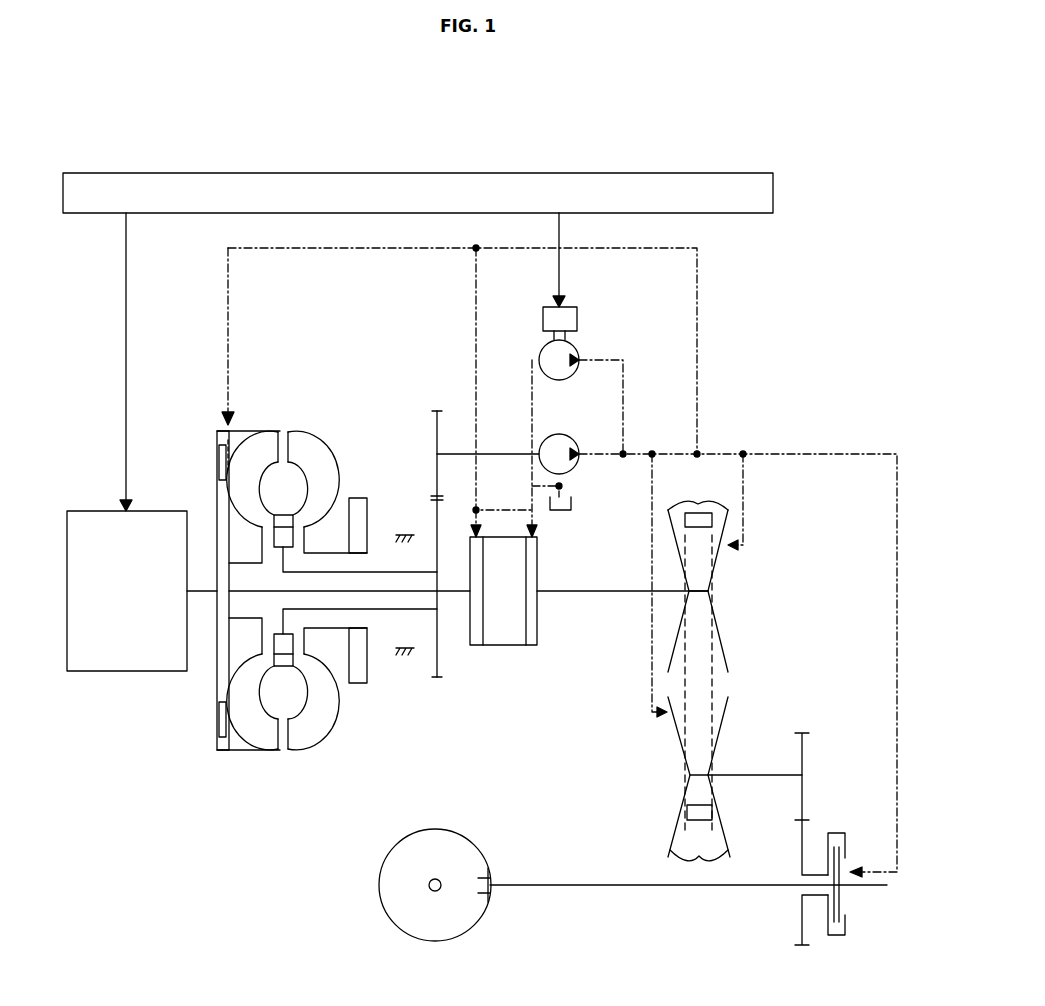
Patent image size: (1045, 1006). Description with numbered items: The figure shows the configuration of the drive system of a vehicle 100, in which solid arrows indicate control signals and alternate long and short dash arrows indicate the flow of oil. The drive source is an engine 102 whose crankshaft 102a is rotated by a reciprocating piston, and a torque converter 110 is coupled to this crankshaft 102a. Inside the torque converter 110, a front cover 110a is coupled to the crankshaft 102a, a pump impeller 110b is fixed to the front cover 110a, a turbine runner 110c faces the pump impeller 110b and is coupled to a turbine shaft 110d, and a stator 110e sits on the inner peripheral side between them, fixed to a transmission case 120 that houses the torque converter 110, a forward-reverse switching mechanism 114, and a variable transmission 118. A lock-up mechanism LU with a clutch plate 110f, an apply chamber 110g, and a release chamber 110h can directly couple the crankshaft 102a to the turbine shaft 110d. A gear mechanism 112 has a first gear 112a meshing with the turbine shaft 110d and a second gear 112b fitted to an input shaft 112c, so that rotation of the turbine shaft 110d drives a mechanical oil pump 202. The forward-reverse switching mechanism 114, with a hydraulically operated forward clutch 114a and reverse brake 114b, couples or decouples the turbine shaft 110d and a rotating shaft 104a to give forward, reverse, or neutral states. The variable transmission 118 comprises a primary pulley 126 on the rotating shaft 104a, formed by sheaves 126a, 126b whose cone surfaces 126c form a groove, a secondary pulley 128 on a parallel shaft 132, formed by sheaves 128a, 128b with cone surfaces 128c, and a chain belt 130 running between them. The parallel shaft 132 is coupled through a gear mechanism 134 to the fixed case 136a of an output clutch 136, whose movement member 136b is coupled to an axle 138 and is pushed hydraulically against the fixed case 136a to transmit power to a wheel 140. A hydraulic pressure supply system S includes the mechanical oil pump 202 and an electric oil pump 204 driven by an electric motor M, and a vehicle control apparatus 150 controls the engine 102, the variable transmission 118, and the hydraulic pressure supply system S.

The vehicle 100 is at (324, 130).
The vehicle control apparatus 150 is at (676, 172).
The engine 102 is at (143, 602).
The crankshaft 102a is at (206, 586).
The rotating shaft 104a is at (608, 594).
The torque converter 110 is at (293, 574).
The front cover 110a is at (222, 748).
The pump impeller 110b is at (290, 740).
The turbine runner 110c is at (270, 748).
The turbine shaft 110d is at (272, 625).
The stator 110e is at (306, 650).
The clutch plate 110f is at (228, 752).
The apply chamber 110g is at (238, 425).
The release chamber 110h is at (220, 450).
The lock-up mechanism LU is at (208, 752).
The gear mechanism 112 is at (462, 510).
The first gear 112a is at (437, 678).
The second gear 112b is at (437, 410).
The input shaft 112c is at (458, 452).
The forward-reverse switching mechanism 114 is at (503, 637).
The forward clutch 114a is at (476, 646).
The reverse brake 114b is at (532, 646).
The variable transmission 118 is at (738, 682).
The transmission case 120 is at (402, 530).
The primary pulley 126 is at (683, 576).
The sheave 126a is at (678, 560).
The sheave 126b is at (740, 604).
The cone surfaces 126c is at (700, 505).
The secondary pulley 128 is at (689, 786).
The sheave 128a is at (675, 748).
The sheave 128b is at (718, 836).
The cone surfaces 128c is at (699, 863).
The belt 130 is at (687, 813).
The parallel shaft 132 is at (756, 774).
The gear mechanism 134 is at (818, 815).
The output clutch 136 is at (847, 887).
The fixed case 136a is at (820, 936).
The movement member 136b is at (840, 900).
The axle 138 is at (644, 888).
The wheel 140 is at (434, 941).
The mechanical oil pump 202 is at (540, 442).
The electric oil pump 204 is at (540, 350).
The electric motor M is at (578, 313).
The hydraulic pressure supply system S is at (730, 283).